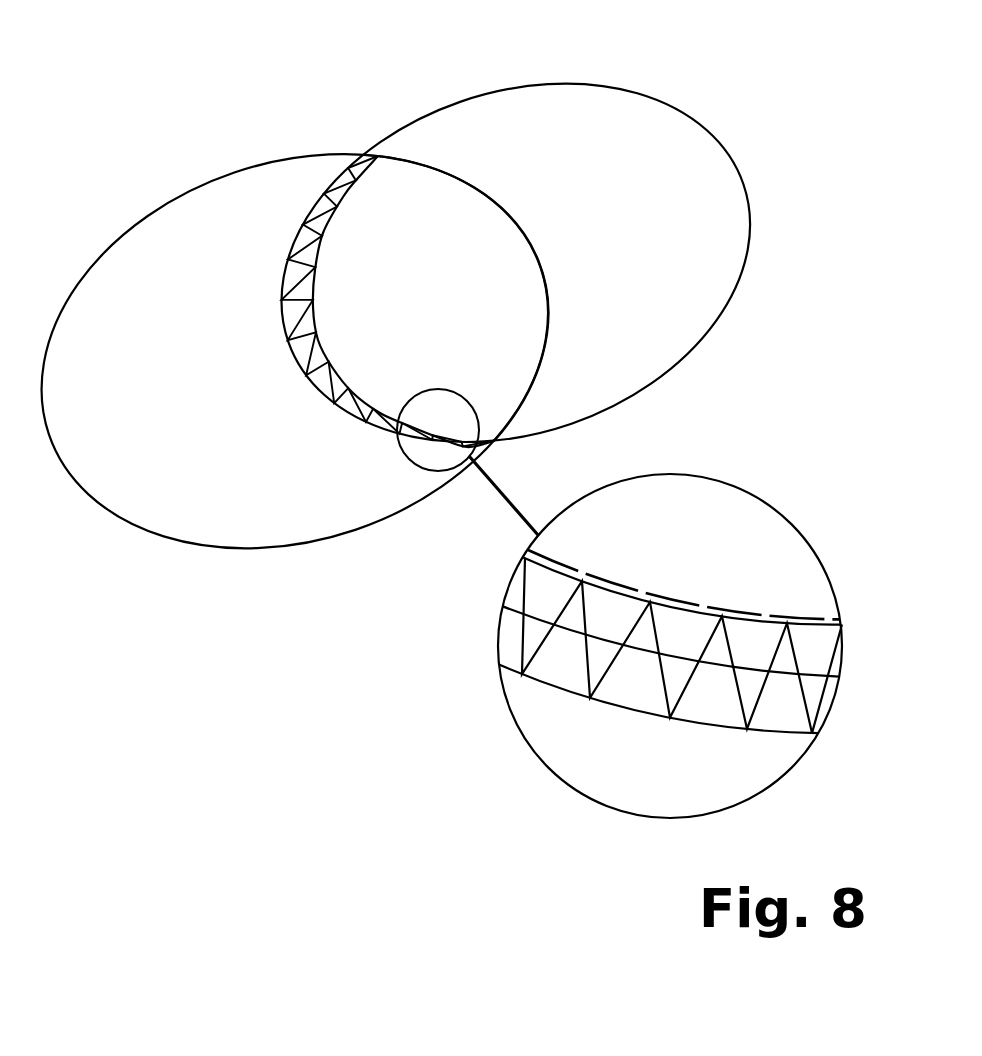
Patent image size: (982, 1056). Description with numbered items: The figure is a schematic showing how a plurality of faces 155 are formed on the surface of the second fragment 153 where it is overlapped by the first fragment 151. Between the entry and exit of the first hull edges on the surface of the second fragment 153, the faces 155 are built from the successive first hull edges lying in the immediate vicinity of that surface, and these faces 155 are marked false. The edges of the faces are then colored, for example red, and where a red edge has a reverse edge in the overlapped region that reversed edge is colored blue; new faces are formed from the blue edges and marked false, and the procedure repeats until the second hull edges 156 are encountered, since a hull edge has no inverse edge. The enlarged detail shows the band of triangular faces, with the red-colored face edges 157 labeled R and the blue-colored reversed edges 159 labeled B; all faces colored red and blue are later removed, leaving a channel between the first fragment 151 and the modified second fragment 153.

The first fragment 151 is at (595, 97).
The second fragment 153 is at (235, 187).
The faces 155 is at (357, 155).
The second hull edges 156 is at (482, 185).
The band cell structure (magnified) 157 is at (520, 630).
The dashed boundary line 159 is at (867, 572).